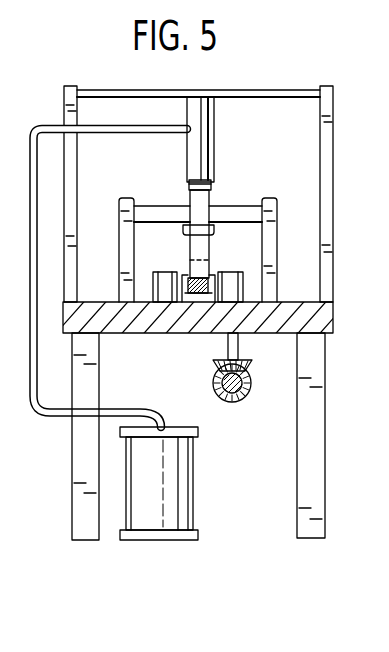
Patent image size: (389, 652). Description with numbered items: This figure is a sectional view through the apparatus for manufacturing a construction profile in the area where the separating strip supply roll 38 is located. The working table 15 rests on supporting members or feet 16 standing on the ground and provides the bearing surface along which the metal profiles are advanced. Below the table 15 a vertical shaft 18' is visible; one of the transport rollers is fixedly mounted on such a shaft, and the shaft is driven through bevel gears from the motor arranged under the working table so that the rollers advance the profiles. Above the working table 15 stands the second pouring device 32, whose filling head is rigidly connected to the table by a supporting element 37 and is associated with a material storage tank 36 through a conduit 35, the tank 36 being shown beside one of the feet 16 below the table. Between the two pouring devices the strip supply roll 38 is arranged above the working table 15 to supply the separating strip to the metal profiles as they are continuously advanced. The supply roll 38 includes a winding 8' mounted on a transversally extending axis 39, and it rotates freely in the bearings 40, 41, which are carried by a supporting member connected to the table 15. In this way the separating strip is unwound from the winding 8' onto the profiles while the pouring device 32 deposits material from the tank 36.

The winding 8' is at (220, 234).
The working table 15 is at (322, 321).
The supporting members or feet 16 is at (80, 503).
The vertical shaft 18' is at (207, 370).
The second pouring device 32 is at (216, 128).
The conduit 35 is at (52, 420).
The material storage tank 36 is at (183, 486).
The supporting element 37 is at (281, 95).
The strip supply roll 38 is at (193, 177).
The transversally extending axis 39 is at (242, 200).
The bearing 40 is at (126, 255).
The bearing 41 is at (271, 258).